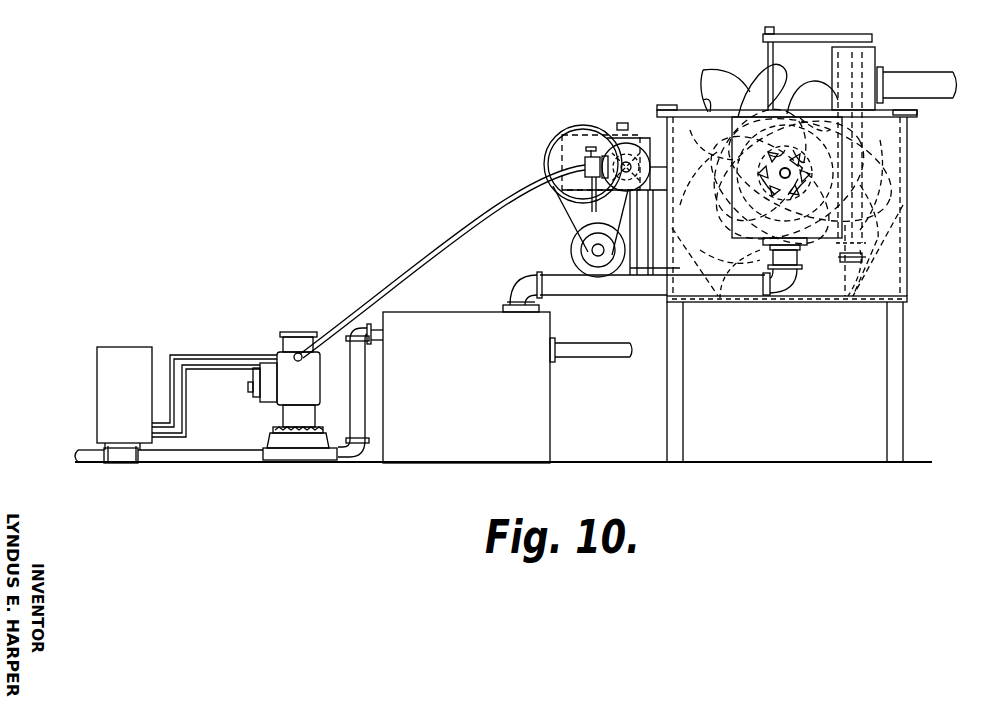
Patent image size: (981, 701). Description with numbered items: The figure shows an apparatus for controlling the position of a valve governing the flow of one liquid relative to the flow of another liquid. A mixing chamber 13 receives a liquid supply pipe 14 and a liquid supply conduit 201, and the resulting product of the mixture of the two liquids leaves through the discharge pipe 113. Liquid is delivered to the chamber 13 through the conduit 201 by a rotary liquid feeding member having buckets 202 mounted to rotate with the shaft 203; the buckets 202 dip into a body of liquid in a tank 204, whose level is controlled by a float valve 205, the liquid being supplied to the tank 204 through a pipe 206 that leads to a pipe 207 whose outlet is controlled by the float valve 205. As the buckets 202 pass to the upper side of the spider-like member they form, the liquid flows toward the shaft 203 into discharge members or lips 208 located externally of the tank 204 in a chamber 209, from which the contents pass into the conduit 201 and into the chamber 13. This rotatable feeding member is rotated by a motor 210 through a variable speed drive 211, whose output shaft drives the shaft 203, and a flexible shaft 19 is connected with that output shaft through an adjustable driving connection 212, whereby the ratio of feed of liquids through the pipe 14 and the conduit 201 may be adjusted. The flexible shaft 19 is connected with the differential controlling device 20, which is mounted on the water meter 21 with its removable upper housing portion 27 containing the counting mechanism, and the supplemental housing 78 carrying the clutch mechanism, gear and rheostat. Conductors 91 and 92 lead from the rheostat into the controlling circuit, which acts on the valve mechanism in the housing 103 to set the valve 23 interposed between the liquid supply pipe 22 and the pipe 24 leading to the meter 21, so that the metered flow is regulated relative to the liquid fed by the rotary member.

The buckets 202 is at (703, 70).
The shaft 203 is at (790, 173).
The tank 204 is at (882, 270).
The float valve 205 is at (850, 298).
The pipe 206 is at (912, 82).
The pipe 207 is at (897, 208).
The discharge members 208 is at (776, 262).
The chamber 209 is at (745, 225).
The liquid supply conduit 201 is at (578, 290).
The motor 210 is at (585, 252).
The variable speed drive 211 is at (638, 145).
The adjustable driving connection 212 is at (607, 135).
The flexible shaft 19 is at (488, 210).
The chamber 13 is at (523, 405).
The discharge pipe 113 is at (570, 348).
The liquid supply pipe 14 is at (355, 395).
The controlling device 20 is at (307, 370).
The upper housing portion 27 is at (305, 337).
The water meter 21 is at (298, 442).
The supplemental housing 78 is at (258, 390).
The housing 103 is at (100, 392).
The conductor 92 is at (205, 355).
The conductor 91 is at (215, 365).
The liquid supply pipe 22 is at (90, 458).
The valve 23 is at (120, 456).
The pipe 24 is at (210, 457).